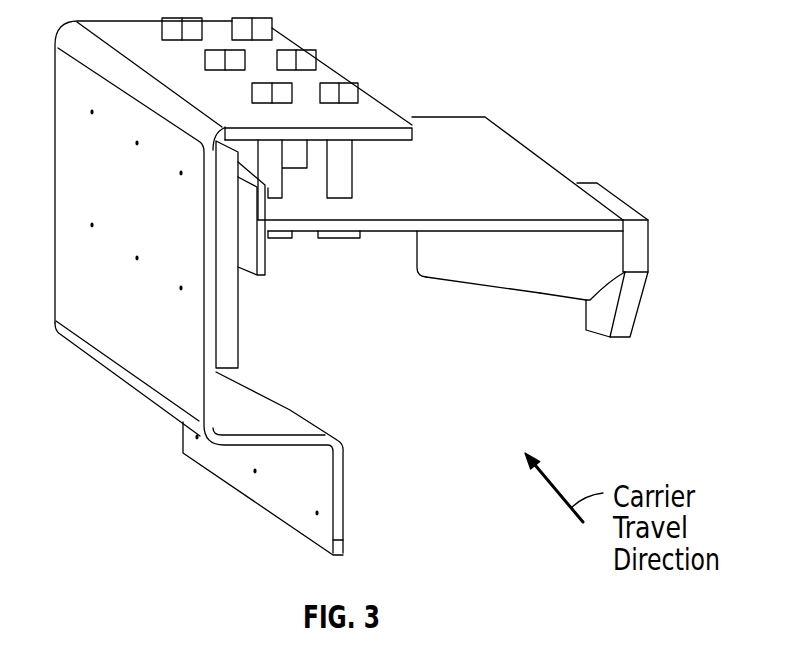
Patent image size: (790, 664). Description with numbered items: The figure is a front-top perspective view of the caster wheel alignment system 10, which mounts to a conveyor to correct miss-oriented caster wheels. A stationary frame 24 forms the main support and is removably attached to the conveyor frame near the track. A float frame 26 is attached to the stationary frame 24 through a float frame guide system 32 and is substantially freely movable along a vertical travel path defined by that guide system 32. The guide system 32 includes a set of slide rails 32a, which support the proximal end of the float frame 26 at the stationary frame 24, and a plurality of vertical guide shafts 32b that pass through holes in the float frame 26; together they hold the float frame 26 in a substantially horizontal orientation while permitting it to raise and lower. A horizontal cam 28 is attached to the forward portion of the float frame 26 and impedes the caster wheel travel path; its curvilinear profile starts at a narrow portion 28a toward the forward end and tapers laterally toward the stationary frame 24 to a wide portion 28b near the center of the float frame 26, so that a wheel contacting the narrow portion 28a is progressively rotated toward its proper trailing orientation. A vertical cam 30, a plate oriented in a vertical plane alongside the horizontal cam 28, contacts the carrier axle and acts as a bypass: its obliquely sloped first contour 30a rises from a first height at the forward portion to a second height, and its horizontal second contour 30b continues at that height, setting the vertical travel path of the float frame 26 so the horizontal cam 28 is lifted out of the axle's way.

The caster wheel alignment system 10 is at (388, 286).
The stationary frame 24 is at (338, 497).
The float frame 26 is at (512, 146).
The horizontal cam 28 is at (537, 281).
The narrow portion 28a is at (570, 314).
The wide portion 28b is at (437, 294).
The vertical cam 30 is at (641, 232).
The first contour 30a is at (637, 290).
The second contour 30b is at (594, 335).
The float frame guide system 32 is at (393, 84).
The slide rails 32a is at (233, 357).
The vertical guide shafts 32b is at (288, 157).